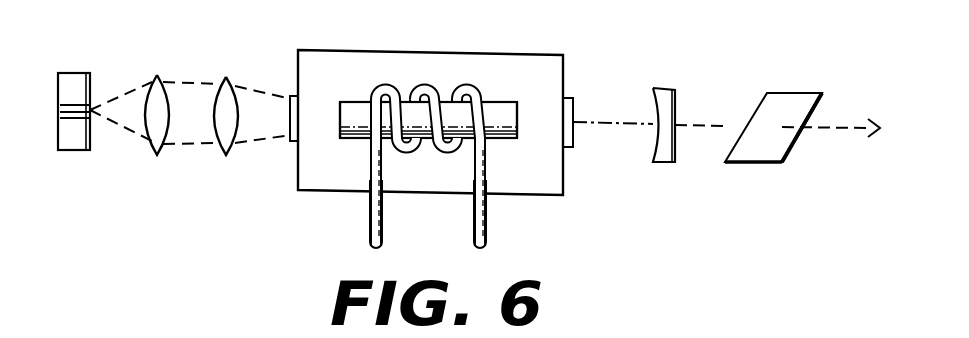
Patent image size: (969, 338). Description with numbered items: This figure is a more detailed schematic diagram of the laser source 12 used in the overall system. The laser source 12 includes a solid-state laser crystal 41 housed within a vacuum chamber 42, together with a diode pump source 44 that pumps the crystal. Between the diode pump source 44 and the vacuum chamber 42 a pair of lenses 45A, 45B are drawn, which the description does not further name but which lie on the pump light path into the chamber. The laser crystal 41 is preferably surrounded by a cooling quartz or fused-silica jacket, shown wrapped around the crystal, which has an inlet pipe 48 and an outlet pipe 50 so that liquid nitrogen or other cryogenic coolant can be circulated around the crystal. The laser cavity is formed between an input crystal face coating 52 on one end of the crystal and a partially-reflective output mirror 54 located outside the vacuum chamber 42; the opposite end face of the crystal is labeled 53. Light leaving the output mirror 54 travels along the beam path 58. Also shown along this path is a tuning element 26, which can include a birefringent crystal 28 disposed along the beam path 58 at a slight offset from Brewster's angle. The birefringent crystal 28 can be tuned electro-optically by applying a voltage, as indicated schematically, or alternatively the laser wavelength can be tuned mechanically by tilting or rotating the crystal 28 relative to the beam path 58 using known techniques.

The laser source 12 is at (650, 48).
The tuning element 26 is at (791, 88).
The birefringent crystal 28 is at (783, 145).
The solid-state laser crystal 41 is at (360, 118).
The vacuum chamber 42 is at (447, 50).
The diode pump source 44 is at (97, 83).
The first collimating lens 45A is at (160, 127).
The second collimating lens 45B is at (230, 127).
The inlet pipe 48 is at (386, 231).
The outlet pipe 50 is at (489, 232).
The input crystal face coating 52 is at (338, 112).
The second end face of rod 53 is at (520, 125).
The partially-reflective output mirror 54 is at (674, 67).
The beam path 58 is at (690, 126).